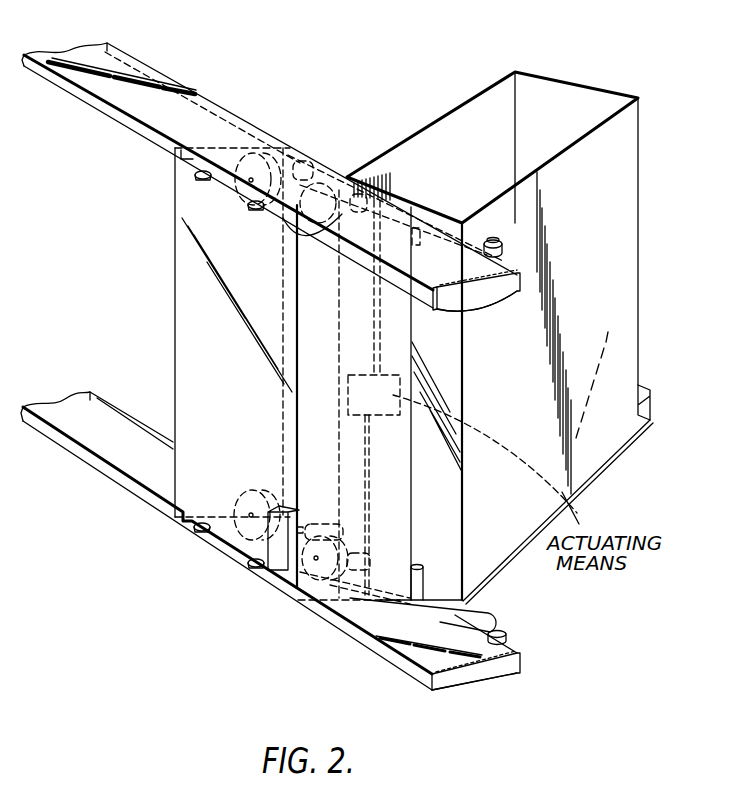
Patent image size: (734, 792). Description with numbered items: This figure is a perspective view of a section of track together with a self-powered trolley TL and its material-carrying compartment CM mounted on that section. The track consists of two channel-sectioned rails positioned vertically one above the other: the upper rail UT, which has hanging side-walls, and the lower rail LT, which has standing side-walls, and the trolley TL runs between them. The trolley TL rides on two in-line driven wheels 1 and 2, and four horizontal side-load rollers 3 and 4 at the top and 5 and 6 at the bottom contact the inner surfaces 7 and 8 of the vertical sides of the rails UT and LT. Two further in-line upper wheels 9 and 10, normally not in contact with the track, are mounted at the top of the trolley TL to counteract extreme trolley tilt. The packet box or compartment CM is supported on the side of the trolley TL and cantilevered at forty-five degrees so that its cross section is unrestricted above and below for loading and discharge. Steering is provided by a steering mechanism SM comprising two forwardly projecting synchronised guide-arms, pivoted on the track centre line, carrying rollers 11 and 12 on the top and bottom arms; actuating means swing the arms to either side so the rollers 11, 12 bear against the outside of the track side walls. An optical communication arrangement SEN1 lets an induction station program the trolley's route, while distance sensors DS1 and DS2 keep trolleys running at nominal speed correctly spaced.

The upper rail UT is at (215, 128).
The lower rail LT is at (80, 421).
The compartment CM is at (570, 105).
The trolley TL is at (176, 336).
The steering mechanism guide-arms SM is at (418, 230).
The optical communication arrangement SEN1 is at (293, 522).
The distance sensor DS1 is at (648, 411).
The distance sensor DS2 is at (423, 572).
The driven wheel 1 is at (240, 495).
The driven wheel 2 is at (343, 540).
The horizontal side-load roller 3 is at (253, 207).
The horizontal side-load roller 4 is at (300, 163).
The horizontal side-load roller 5 is at (238, 563).
The horizontal side-load roller 6 is at (315, 526).
The inner surface 7 is at (511, 656).
The inner surface 8 is at (510, 287).
The upper wheel 9 is at (260, 136).
The upper wheel 10 is at (326, 188).
The roller 11 is at (500, 248).
The roller 12 is at (505, 630).